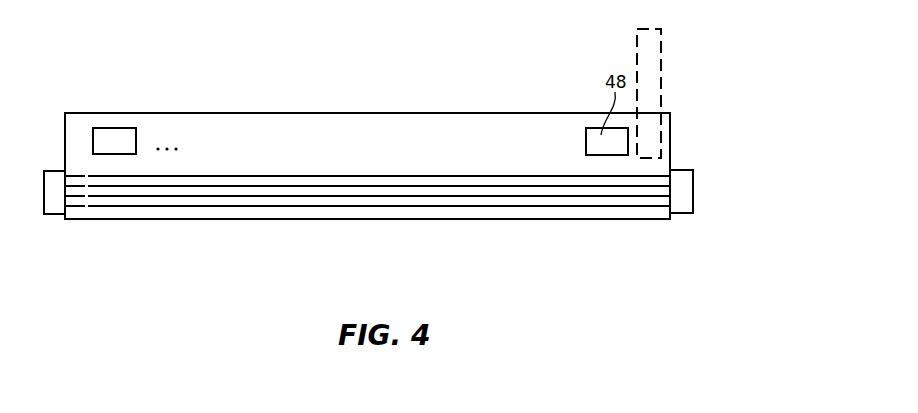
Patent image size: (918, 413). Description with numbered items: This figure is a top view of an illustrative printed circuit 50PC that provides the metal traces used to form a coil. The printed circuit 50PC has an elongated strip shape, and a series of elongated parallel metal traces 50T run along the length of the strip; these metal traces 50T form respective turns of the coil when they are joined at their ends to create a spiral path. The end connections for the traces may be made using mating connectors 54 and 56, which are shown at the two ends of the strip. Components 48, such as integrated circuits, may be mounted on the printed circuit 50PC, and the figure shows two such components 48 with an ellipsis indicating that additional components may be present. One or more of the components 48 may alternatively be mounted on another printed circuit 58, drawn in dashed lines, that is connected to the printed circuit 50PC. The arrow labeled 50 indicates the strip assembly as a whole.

The components 48 is at (113, 135).
The light guide 50 is at (239, 172).
The printed circuit 50PC is at (372, 113).
The metal traces 50T is at (230, 197).
The mating connector 54 is at (44, 214).
The mating connector 56 is at (693, 190).
The printed circuit 58 is at (661, 53).